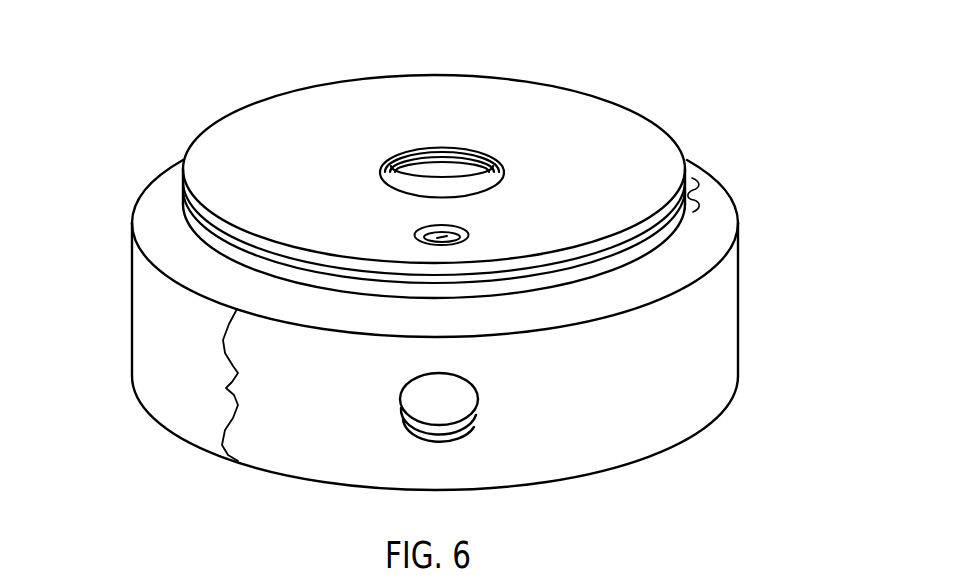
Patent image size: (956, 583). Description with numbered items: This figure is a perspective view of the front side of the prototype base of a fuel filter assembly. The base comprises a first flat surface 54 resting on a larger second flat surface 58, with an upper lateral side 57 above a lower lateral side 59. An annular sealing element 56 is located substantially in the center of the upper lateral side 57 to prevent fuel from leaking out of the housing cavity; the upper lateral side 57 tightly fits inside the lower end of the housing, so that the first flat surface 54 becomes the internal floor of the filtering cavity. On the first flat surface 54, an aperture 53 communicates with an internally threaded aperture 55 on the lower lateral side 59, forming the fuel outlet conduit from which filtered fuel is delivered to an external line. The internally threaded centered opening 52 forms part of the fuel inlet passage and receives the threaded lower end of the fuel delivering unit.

The centered opening 52 is at (434, 168).
The aperture 53 is at (468, 233).
The first flat surface 54 is at (270, 128).
The aperture 55 is at (440, 405).
The annular sealing element 56 is at (205, 230).
The upper lateral side 57 is at (698, 193).
The second flat surface 58 is at (695, 254).
The lower lateral side 59 is at (227, 388).